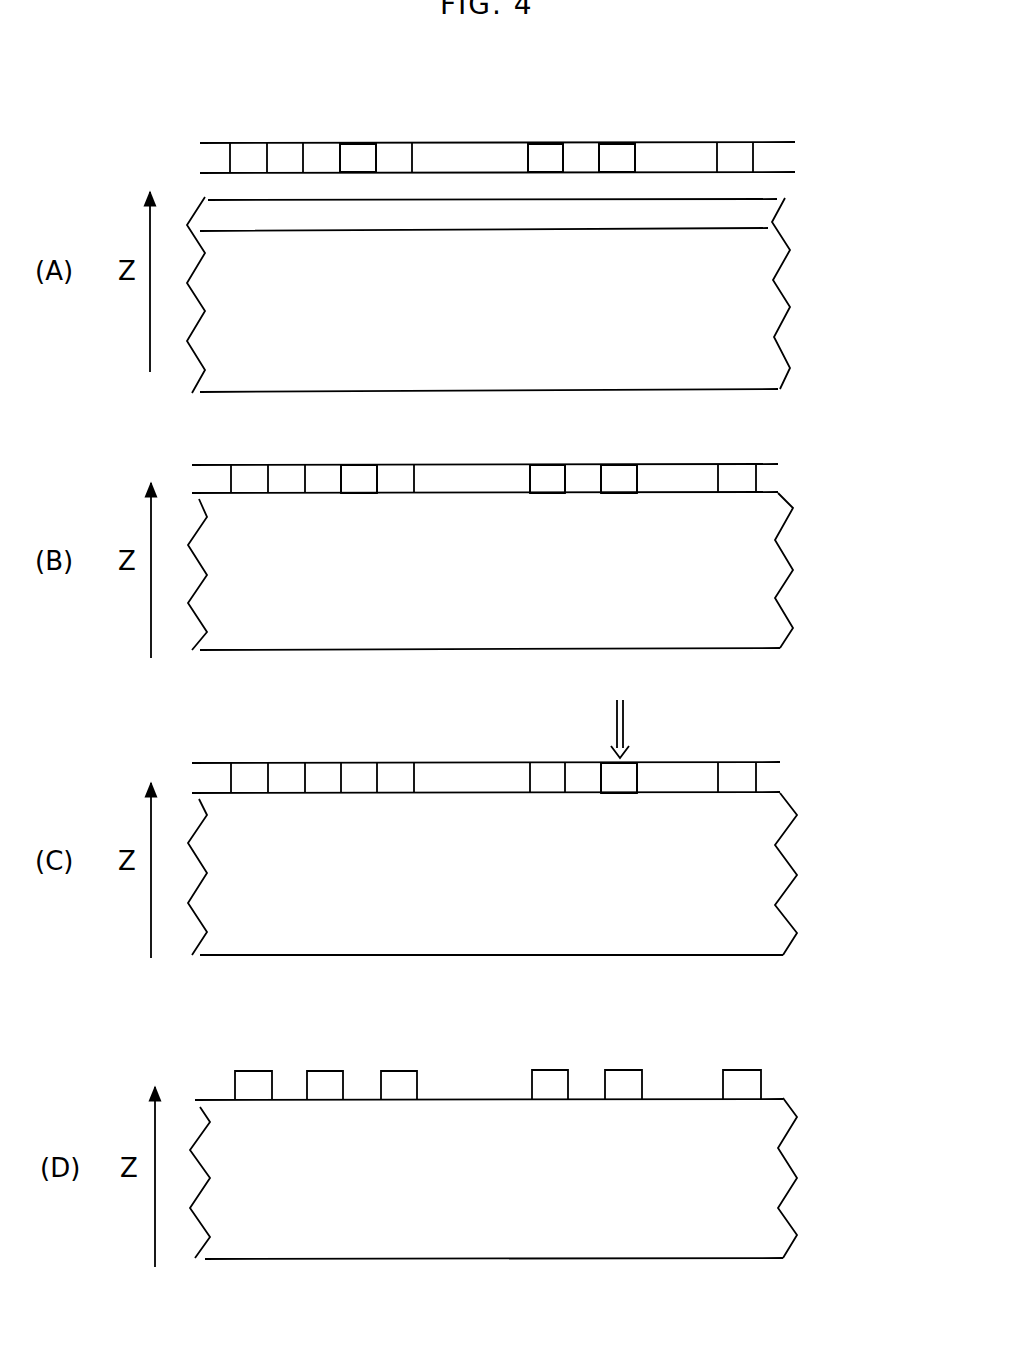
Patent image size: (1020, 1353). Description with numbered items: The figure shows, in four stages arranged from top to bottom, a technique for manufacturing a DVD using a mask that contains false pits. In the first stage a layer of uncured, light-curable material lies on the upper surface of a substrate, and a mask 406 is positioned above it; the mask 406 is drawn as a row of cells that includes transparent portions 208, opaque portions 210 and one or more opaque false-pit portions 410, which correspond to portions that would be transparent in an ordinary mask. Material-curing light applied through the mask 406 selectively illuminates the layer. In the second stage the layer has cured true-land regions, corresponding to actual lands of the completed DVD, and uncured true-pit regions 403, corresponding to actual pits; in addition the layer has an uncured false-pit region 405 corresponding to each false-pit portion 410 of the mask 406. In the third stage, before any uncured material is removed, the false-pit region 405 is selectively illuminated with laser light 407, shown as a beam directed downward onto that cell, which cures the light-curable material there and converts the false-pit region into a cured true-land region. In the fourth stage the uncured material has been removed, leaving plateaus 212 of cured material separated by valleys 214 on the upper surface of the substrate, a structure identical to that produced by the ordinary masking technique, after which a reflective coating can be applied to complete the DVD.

The mask 406 is at (814, 155).
The opaque portions 210 is at (357, 138).
The transparent portions 208 is at (545, 134).
The false-pit portions 410 is at (617, 134).
The true-pit regions 403 is at (358, 500).
The false-pit region 405 is at (620, 500).
The laser light 407 is at (629, 722).
The plateaus 212 is at (398, 1062).
The valleys 214 is at (470, 1090).